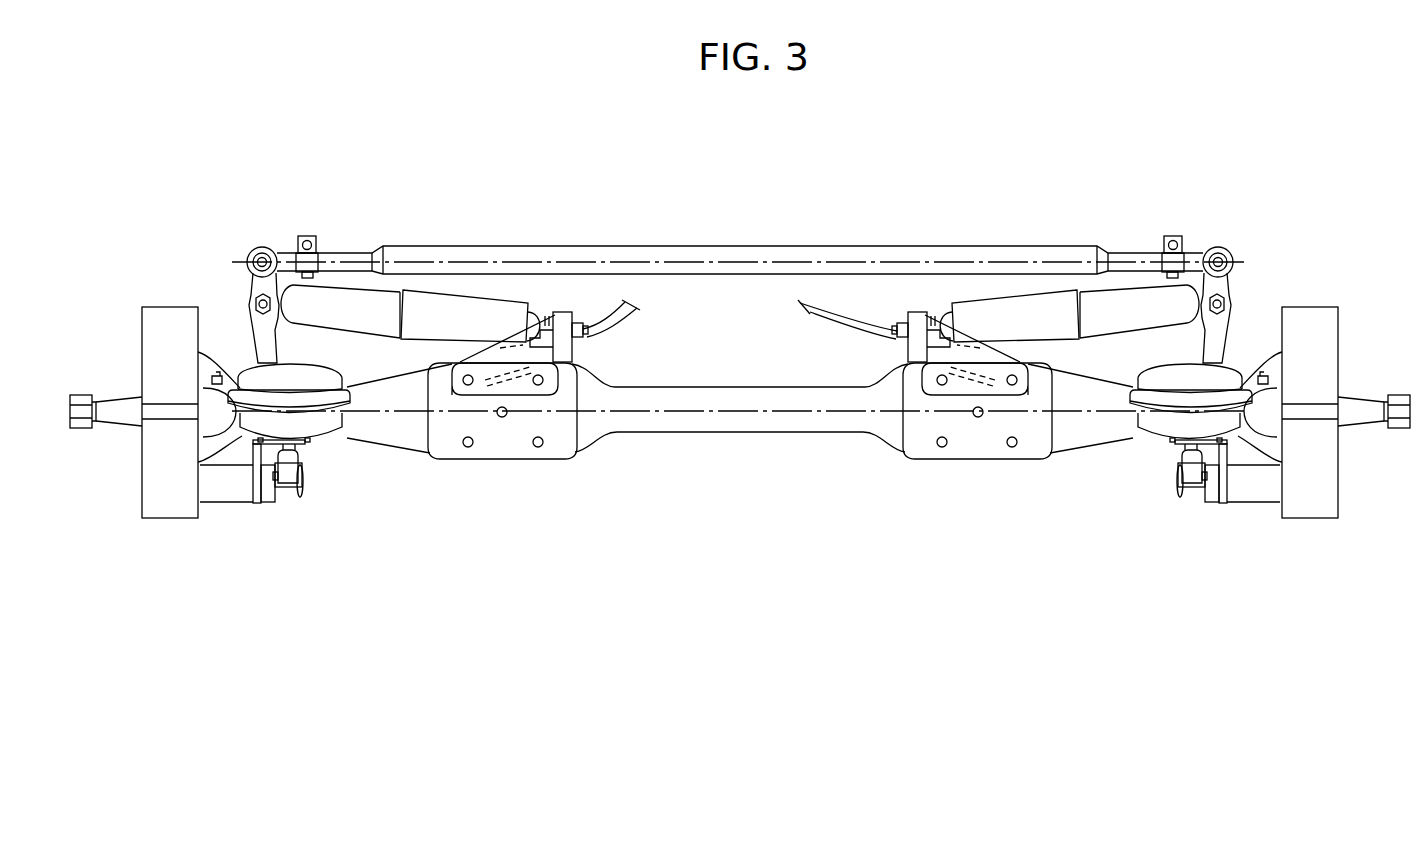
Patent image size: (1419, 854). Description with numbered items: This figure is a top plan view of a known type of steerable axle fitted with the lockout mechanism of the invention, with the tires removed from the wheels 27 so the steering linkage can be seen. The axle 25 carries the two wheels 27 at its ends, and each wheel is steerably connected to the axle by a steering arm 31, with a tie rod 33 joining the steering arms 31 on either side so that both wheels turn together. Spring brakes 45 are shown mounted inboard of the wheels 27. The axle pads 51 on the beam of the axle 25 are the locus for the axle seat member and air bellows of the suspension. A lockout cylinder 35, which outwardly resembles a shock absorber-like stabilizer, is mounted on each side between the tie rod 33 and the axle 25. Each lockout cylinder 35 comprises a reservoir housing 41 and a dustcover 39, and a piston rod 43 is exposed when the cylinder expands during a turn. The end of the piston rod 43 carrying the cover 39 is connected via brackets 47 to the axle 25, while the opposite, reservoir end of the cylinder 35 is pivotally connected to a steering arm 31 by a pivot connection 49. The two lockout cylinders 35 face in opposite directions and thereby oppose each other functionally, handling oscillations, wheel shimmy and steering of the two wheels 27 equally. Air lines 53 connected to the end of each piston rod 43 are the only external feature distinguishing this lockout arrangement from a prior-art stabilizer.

The axle 25 is at (765, 433).
The wheel 27 is at (167, 475).
The steering arm 31 is at (258, 334).
The tie rod 33 is at (782, 253).
The lockout cylinder 35 is at (437, 284).
The dustcover 39 is at (456, 331).
The reservoir housing 41 is at (361, 321).
The piston rod 43 is at (567, 313).
The spring brake 45 is at (315, 450).
The bracket 47 is at (567, 355).
The pivot connection 49 is at (257, 297).
The axle pad 51 is at (514, 448).
The air line 53 is at (642, 313).